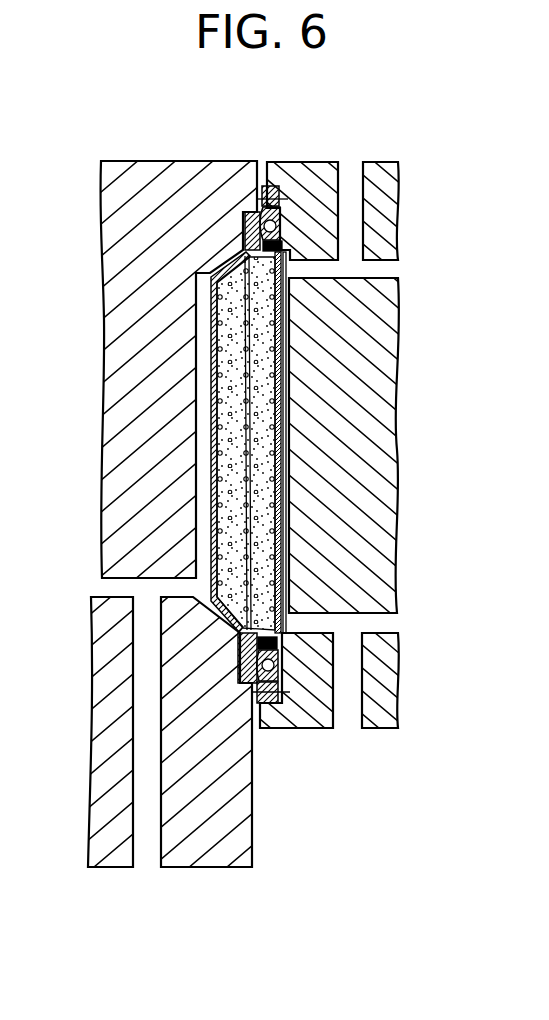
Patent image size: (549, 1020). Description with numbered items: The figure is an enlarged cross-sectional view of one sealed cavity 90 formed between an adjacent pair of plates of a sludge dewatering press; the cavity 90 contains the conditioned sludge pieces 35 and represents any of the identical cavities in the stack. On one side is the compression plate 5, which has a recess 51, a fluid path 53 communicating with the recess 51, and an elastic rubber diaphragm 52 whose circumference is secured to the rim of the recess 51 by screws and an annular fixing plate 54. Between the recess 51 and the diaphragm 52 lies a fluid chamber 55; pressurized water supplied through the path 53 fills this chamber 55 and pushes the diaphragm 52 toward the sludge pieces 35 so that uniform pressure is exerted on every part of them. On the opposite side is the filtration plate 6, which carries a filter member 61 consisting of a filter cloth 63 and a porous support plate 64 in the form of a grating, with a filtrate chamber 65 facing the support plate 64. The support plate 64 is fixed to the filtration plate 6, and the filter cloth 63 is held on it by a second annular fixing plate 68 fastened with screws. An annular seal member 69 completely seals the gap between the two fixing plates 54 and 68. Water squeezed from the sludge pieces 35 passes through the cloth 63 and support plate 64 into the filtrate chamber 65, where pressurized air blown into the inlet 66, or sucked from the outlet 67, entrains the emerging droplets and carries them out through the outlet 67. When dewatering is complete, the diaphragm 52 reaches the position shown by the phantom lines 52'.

The compression plate 5 is at (179, 161).
The filtration plate 6 is at (386, 163).
The conditioned sludge pieces 35 is at (242, 325).
The recess 51 is at (208, 280).
The diaphragm 52 is at (157, 443).
The phantom lines 52' is at (362, 442).
The fluid path 53 is at (146, 868).
The annular fixing plate 54 is at (245, 234).
The fluid chamber 55 is at (208, 393).
The filter member 61 is at (290, 380).
The filter cloth 63 is at (243, 328).
The porous support plate 64 is at (286, 463).
The filtrate chamber 65 is at (286, 427).
The inlet 66 is at (349, 163).
The outlet 67 is at (343, 722).
The annular fixing plate 68 is at (285, 247).
The annular seal member 69 is at (274, 190).
The sealed cavity 90 is at (224, 452).